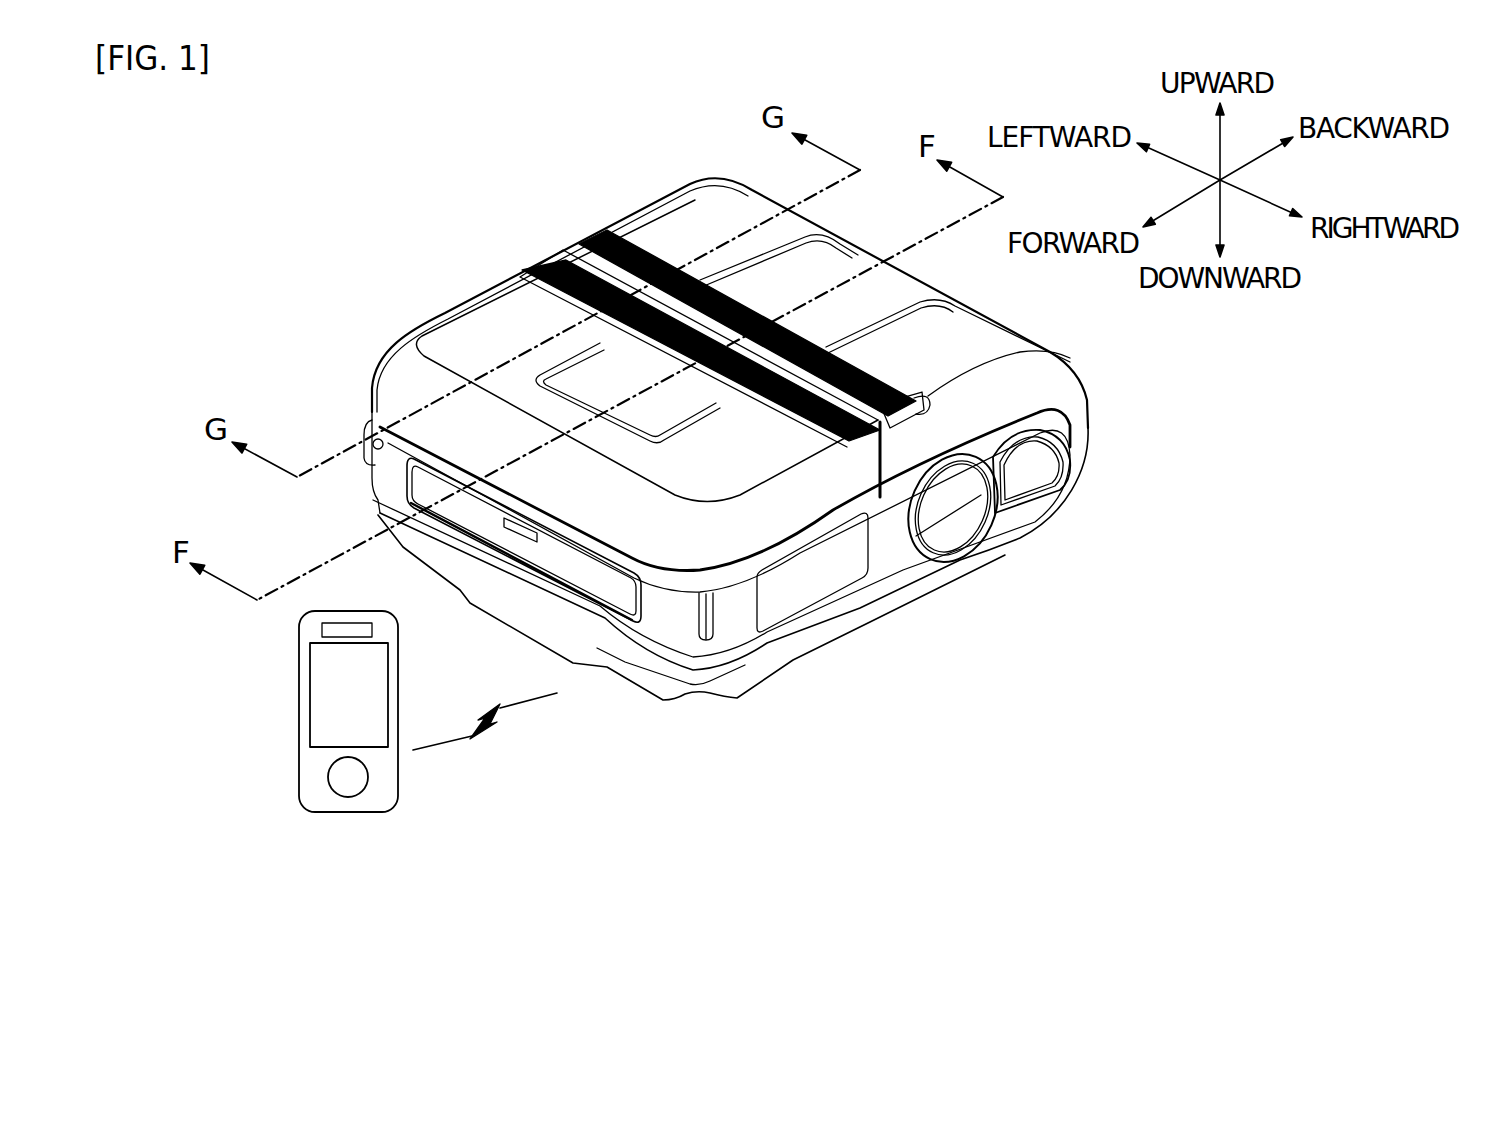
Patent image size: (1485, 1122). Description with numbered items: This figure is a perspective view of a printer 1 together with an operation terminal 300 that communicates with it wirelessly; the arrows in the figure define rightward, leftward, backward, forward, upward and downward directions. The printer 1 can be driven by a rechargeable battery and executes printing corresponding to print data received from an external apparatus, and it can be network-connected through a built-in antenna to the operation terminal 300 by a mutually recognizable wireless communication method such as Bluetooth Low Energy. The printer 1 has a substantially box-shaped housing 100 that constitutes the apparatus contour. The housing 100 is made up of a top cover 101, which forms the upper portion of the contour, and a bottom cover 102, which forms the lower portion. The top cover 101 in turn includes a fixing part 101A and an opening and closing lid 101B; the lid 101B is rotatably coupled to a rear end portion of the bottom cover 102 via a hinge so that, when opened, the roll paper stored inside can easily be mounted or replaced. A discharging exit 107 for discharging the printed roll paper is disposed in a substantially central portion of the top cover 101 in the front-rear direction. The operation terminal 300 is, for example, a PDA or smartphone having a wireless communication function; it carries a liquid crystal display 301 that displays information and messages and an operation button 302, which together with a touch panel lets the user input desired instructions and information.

The printer 1 is at (443, 190).
The housing 100 is at (359, 308).
The top cover 101 is at (1140, 588).
The fixing part 101A is at (765, 505).
The opening and closing lid 101B is at (907, 450).
The bottom cover 102 is at (765, 655).
The discharging exit 107 is at (830, 408).
The operation terminal 300 is at (403, 825).
The liquid crystal display 301 is at (315, 710).
The operation button 302 is at (343, 793).